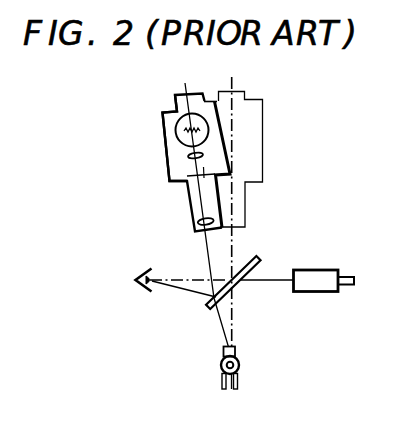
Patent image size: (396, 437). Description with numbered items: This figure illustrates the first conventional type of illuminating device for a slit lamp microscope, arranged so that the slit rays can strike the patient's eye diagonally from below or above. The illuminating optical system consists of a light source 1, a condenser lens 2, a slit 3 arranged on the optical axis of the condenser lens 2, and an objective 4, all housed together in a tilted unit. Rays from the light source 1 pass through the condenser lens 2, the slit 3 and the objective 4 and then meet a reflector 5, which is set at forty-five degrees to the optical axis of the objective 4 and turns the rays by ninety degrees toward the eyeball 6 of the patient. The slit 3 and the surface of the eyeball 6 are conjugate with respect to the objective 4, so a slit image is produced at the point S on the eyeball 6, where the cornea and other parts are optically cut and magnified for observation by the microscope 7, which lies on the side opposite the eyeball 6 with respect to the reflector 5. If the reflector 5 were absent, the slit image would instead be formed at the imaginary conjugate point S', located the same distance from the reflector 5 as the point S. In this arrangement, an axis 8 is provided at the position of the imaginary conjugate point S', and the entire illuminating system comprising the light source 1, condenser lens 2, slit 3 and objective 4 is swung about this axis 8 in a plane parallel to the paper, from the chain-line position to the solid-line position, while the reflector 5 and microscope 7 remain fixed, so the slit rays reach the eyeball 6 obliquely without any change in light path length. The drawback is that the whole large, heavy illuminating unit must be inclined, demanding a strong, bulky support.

The light source 1 is at (176, 125).
The condenser lens 2 is at (189, 156).
The slit 3 is at (201, 175).
The objective 4 is at (198, 221).
The reflector 5 is at (258, 262).
The eyeball 6 is at (148, 268).
The microscope 7 is at (315, 280).
The axis 8 is at (240, 362).
The point S is at (165, 258).
The imaginary conjugate point S' is at (206, 358).